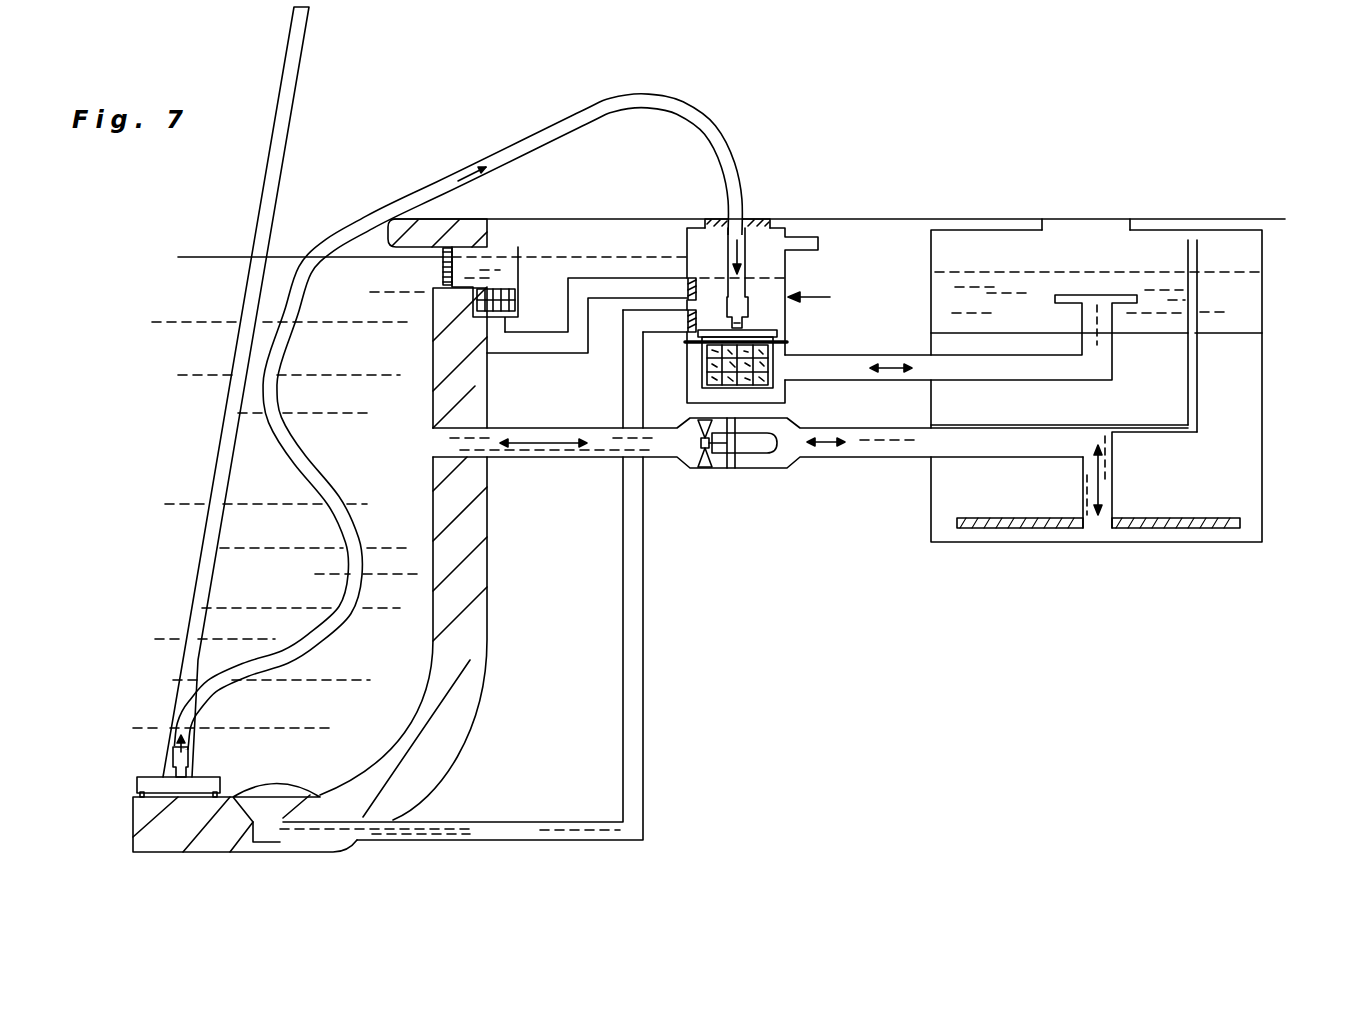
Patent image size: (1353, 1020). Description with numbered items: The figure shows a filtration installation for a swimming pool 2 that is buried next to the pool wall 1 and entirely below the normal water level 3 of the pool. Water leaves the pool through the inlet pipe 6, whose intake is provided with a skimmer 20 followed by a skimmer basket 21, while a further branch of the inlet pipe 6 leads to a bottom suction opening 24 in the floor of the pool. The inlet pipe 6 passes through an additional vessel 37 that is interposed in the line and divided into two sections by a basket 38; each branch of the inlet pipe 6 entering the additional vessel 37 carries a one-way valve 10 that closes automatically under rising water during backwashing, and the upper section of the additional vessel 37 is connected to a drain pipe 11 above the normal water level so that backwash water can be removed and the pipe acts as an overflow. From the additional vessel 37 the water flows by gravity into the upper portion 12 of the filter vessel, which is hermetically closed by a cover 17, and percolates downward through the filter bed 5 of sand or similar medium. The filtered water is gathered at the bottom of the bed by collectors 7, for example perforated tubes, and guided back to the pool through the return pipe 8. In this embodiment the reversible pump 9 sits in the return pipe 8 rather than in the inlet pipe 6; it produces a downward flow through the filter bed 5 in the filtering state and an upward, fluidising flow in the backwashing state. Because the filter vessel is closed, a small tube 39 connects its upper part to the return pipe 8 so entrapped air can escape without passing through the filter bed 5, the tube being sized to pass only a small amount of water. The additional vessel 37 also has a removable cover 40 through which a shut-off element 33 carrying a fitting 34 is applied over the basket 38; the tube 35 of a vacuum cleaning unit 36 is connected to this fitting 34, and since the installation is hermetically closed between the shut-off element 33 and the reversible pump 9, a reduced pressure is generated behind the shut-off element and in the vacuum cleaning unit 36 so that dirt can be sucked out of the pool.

The wall 1 is at (472, 660).
The swimming pool 2 is at (266, 490).
The normal water level 3 is at (217, 257).
The filter bed 5 is at (1235, 437).
The inlet pipe 6 is at (573, 297).
The collectors 7 is at (1175, 528).
The return pipe 8 is at (867, 450).
The reversible pump 9 is at (748, 445).
The one-way valve 10 is at (695, 290).
The drain pipe 11 is at (808, 237).
The upper portion 12 is at (1245, 286).
The cover 17 is at (1088, 217).
The skimmer 20 is at (432, 272).
The skimmer basket 21 is at (500, 285).
The bottom suction opening 24 is at (267, 807).
The shut-off element 33 is at (770, 327).
The fitting 34 is at (741, 322).
The tube 35 is at (698, 130).
The vacuum cleaning unit 36 is at (190, 715).
The additional vessel 37 is at (825, 299).
The basket 38 is at (760, 360).
The small tube 39 is at (1193, 307).
The removable cover 40 is at (753, 217).